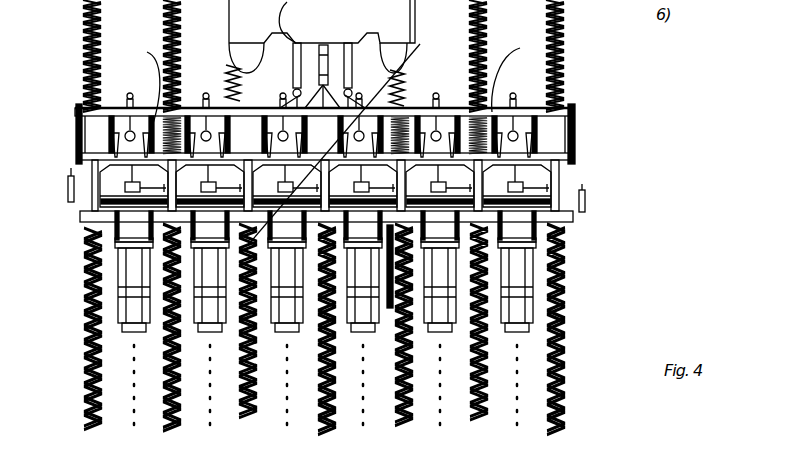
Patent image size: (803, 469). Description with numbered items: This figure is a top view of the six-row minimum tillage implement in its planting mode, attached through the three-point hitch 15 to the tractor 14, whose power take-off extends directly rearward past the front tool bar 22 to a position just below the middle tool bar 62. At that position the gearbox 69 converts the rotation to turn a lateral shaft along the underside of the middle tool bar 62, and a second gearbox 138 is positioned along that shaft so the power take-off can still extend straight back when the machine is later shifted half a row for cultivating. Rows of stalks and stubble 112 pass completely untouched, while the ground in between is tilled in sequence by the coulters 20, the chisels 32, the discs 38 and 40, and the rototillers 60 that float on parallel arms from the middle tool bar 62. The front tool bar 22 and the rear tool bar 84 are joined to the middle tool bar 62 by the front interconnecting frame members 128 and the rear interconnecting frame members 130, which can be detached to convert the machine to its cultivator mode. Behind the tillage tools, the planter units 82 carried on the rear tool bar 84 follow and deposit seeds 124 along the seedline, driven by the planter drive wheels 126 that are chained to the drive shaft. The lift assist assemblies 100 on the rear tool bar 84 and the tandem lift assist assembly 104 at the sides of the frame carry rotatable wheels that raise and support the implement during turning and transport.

The tractor 14 is at (356, 16).
The three-point hitch 15 is at (271, 36).
The coulters 20 is at (125, 132).
The front tool bar 22 is at (82, 98).
The chisels 32 is at (138, 128).
The disc 38 is at (78, 113).
The disc 40 is at (334, 85).
The rototiller 60 is at (585, 210).
The middle tool bar 62 is at (80, 165).
The gearbox 69 is at (404, 44).
The planter unit 82 is at (122, 262).
The rear tool bar 84 is at (82, 220).
The lift assist assembly 100 is at (330, 300).
The tandem lift assist assembly 104 is at (78, 154).
The stalks and stubble 112 is at (100, 12).
The seeds 124 is at (135, 417).
The planter drive wheels 126 is at (330, 262).
The front interconnecting frame members 128 is at (233, 92).
The rear interconnecting frame members 130 is at (92, 178).
The second gearbox 138 is at (347, 143).